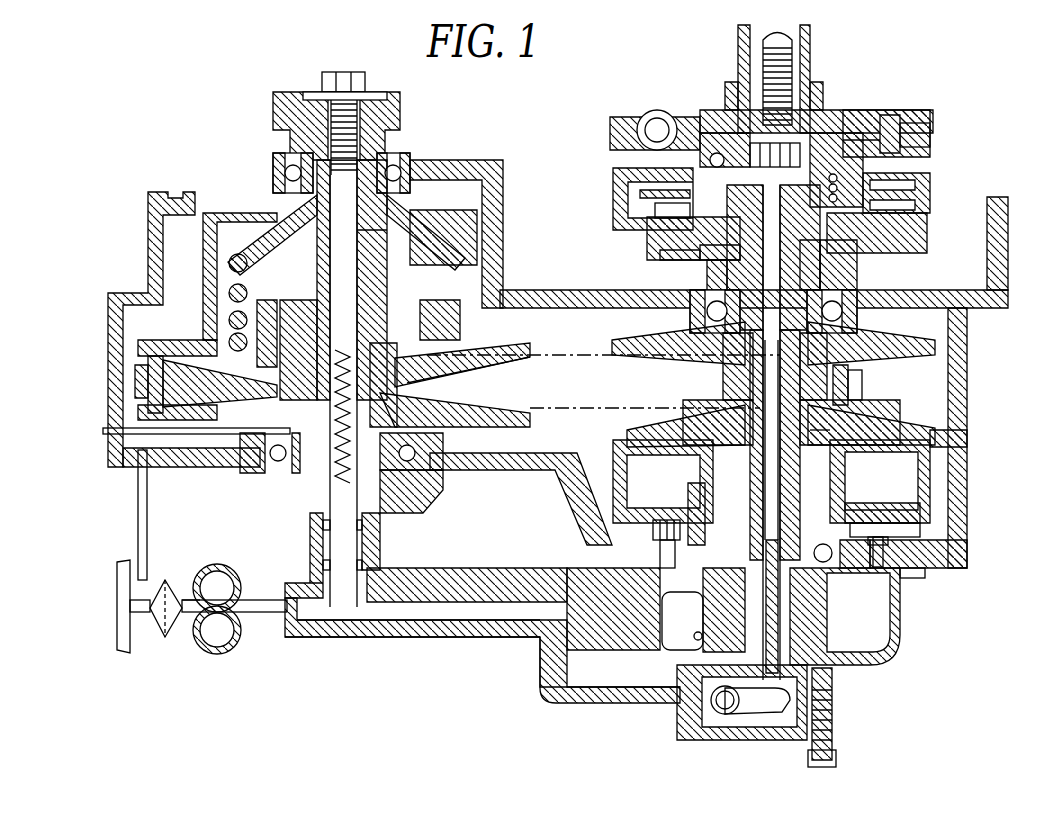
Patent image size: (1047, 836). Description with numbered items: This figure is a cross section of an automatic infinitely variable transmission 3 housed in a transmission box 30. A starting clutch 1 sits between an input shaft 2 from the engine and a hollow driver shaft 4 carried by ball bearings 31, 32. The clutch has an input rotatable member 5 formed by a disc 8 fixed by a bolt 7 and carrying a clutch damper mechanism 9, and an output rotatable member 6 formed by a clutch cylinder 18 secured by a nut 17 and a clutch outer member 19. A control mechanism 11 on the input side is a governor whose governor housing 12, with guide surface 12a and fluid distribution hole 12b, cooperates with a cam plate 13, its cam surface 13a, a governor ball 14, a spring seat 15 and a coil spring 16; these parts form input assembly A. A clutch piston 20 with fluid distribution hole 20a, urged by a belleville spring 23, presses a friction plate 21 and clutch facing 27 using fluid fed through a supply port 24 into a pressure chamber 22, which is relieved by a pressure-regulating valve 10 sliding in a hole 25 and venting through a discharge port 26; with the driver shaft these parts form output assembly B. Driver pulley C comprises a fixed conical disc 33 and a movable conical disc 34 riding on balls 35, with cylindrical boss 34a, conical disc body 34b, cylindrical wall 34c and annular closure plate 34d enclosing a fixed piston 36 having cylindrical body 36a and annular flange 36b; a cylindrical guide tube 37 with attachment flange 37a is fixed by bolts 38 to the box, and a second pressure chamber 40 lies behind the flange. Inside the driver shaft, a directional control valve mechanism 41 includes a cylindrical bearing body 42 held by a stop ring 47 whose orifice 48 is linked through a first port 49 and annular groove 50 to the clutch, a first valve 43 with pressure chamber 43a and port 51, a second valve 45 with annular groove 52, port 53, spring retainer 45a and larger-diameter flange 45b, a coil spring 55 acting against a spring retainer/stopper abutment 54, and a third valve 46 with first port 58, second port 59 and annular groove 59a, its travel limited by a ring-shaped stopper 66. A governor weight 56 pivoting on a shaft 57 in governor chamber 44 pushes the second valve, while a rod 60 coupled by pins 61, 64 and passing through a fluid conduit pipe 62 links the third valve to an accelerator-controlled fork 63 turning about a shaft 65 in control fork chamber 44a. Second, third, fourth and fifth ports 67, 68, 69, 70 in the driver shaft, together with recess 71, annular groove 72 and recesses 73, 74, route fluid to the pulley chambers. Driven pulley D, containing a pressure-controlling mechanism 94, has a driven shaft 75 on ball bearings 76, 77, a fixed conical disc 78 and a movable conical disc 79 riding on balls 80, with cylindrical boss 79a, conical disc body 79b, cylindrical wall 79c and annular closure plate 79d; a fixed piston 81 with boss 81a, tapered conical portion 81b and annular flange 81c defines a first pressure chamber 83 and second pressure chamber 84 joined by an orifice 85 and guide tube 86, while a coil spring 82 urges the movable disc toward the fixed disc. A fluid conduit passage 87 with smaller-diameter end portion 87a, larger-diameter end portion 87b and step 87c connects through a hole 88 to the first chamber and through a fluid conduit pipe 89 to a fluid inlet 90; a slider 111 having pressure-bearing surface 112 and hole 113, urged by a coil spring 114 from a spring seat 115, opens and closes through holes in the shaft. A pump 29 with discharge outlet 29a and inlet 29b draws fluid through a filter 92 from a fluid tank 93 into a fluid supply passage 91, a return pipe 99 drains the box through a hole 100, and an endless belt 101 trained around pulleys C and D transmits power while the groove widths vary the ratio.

The continuously variable transmission 1 is at (982, 94).
The adjusting bolt housing 2 is at (800, 50).
The secondary pulley 3 is at (940, 403).
The sleeve 4 is at (735, 268).
The valve body 5 is at (943, 135).
The control valve 6 is at (940, 215).
The adjusting screw 7 is at (805, 70).
The valve housing 8 is at (945, 116).
The valve port 9 is at (930, 142).
The valve sleeve 10 is at (655, 250).
The valve spool 11 is at (862, 175).
The valve spring 12 is at (850, 140).
The spring seat 12a is at (722, 118).
The spring retainer 12b is at (897, 118).
The pilot valve body 13 is at (630, 115).
The pilot valve port 13a is at (655, 118).
The valve plate 14 is at (690, 118).
The piston 15 is at (655, 228).
The spring 16 is at (638, 216).
The nut 17 is at (812, 115).
The valve seat 18 is at (900, 255).
The valve element 19 is at (928, 230).
The plunger 20 is at (880, 245).
The plunger passage 20a is at (930, 185).
The valve chamber 21 is at (930, 196).
The passage 22 is at (855, 262).
The orifice 23 is at (905, 240).
The collar 24 is at (705, 262).
The seal ring 25 is at (690, 270).
The regulator valve body 26 is at (625, 172).
The valve passage 27 is at (900, 178).
The oil pump 29 is at (236, 650).
The pump drive shaft 29a is at (262, 612).
The pump gear 29b is at (186, 617).
The transmission casing 30 is at (540, 290).
The bearing 31 is at (695, 312).
The housing boss 32 is at (897, 615).
The fixed sheave of secondary pulley 33 is at (910, 343).
The hydraulic cylinder 34 is at (925, 440).
The cylinder bottom 34a is at (895, 590).
The cylinder flange 34b is at (948, 440).
The cylinder wall 34c is at (930, 515).
The fastening bolt 34d is at (884, 550).
The pressure chamber 35 is at (920, 463).
The piston 36 is at (925, 482).
The piston flange 36a is at (855, 478).
The piston seal 36b is at (925, 500).
The retainer plate 37 is at (905, 530).
The retainer flange 37a is at (940, 562).
The nut 38 is at (925, 580).
The spring 40 is at (915, 470).
The secondary shaft 41 is at (828, 635).
The shaft bore 42 is at (772, 240).
The fixed sheave 43 is at (690, 347).
The bearing 43a is at (858, 312).
The shaft end 44 is at (912, 630).
The bracket 44a is at (750, 722).
The lower casing wall 45 is at (740, 672).
The movable sheave 45a is at (732, 430).
The sheave hub 45b is at (880, 655).
The hub 46 is at (735, 372).
The sleeve 47 is at (752, 222).
The bushing 48 is at (800, 225).
The collar 49 is at (840, 258).
The spacer 50 is at (810, 258).
The V-belt 51 is at (640, 353).
The sheave wall 52 is at (608, 532).
The sheave rim 53 is at (615, 452).
The key 54 is at (860, 372).
The movable sheave half 55 is at (898, 410).
The casing bottom 56 is at (600, 640).
The lever 57 is at (700, 626).
The ball 58 is at (830, 565).
The spline 59 is at (795, 372).
The spline groove 59a is at (822, 410).
The rod 60 is at (790, 640).
The bearing 61 is at (890, 640).
The pin 62 is at (798, 610).
The arm 63 is at (762, 716).
The bolt 64 is at (832, 680).
The pivot pin 65 is at (722, 706).
The stop 66 is at (865, 390).
The hub 67 is at (723, 386).
The sheave face 68 is at (640, 430).
The cylinder wall 69 is at (625, 500).
The bolt 70 is at (705, 572).
The belt centerline 71 is at (665, 408).
The hydraulic cylinder 72 is at (700, 490).
The piston 73 is at (688, 512).
The nut 74 is at (625, 555).
The housing 75 is at (425, 500).
The bearing 76 is at (415, 162).
The bearing housing 77 is at (442, 480).
The sheave 78 is at (500, 422).
The primary pulley 79 is at (516, 338).
The balls 79a is at (228, 300).
The ring 79b is at (165, 343).
The spring 79c is at (205, 265).
The retainer 79d is at (225, 213).
The primary shaft 80 is at (345, 272).
The cylinder 81 is at (205, 248).
The cylinder flange 81a is at (265, 213).
The disc spring 81b is at (285, 238).
The cover 81c is at (185, 192).
The sheave face 82 is at (505, 353).
The spring 83 is at (458, 318).
The housing 84 is at (462, 215).
The bolt 85 is at (285, 175).
The cylinder 86 is at (422, 214).
The movable sheave 87 is at (322, 300).
The sheave hub 87a is at (330, 270).
The piston 87b is at (222, 386).
The sheave wall 87c is at (265, 345).
The threaded bolt 88 is at (355, 236).
The bearing 89 is at (268, 480).
The shaft end 90 is at (358, 548).
The casing wall 91 is at (442, 628).
The bevel gear 92 is at (160, 625).
The plate 93 is at (118, 600).
The passage 94 is at (264, 423).
The rod 99 is at (138, 520).
The lever 100 is at (140, 456).
The sensor 101 is at (135, 387).
The spline 111 is at (340, 338).
The spring 112 is at (302, 336).
The hub 113 is at (375, 402).
The seal 114 is at (300, 495).
The bearing 115 is at (315, 510).
The pilot valve section A is at (578, 65).
The regulator valve section B is at (578, 165).
The secondary pulley section C is at (952, 340).
The primary pulley section D is at (88, 330).